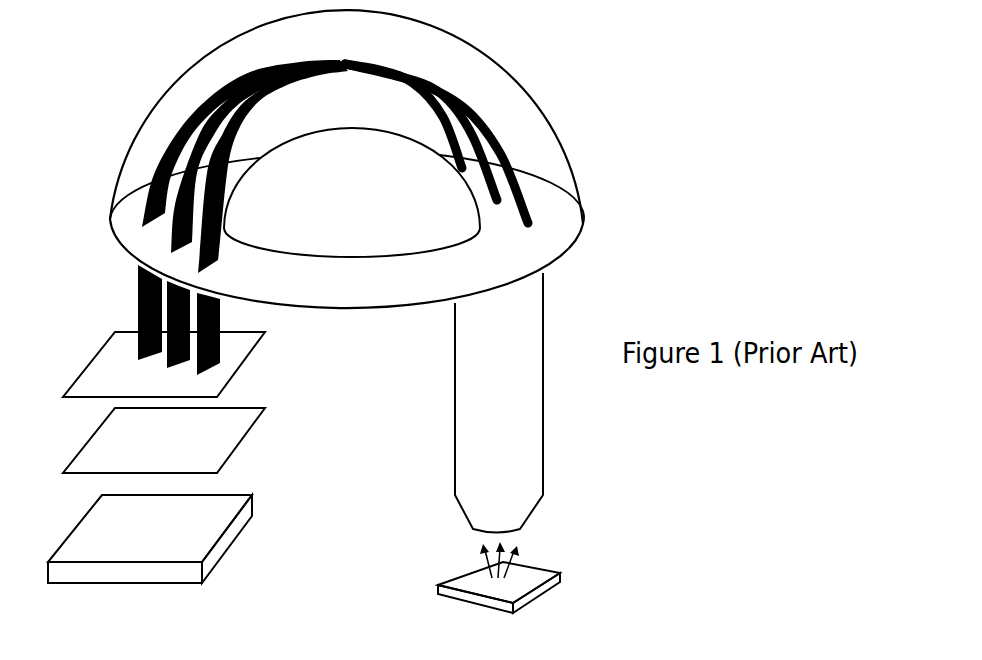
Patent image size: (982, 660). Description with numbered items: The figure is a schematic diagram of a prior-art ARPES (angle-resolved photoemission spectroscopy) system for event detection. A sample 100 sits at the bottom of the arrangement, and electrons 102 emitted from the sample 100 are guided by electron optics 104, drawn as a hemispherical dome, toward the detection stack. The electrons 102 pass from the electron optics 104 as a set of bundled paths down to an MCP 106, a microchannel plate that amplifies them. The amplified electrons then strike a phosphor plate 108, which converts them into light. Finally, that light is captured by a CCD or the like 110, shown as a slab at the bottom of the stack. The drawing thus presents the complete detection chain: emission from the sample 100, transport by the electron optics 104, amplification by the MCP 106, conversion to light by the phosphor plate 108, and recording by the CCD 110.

The sample 100 is at (536, 589).
The electrons 102 is at (316, 217).
The electron optics 104 is at (347, 204).
The MCP 106 is at (121, 392).
The phosphor plate 108 is at (118, 469).
The CCD 110 is at (103, 557).